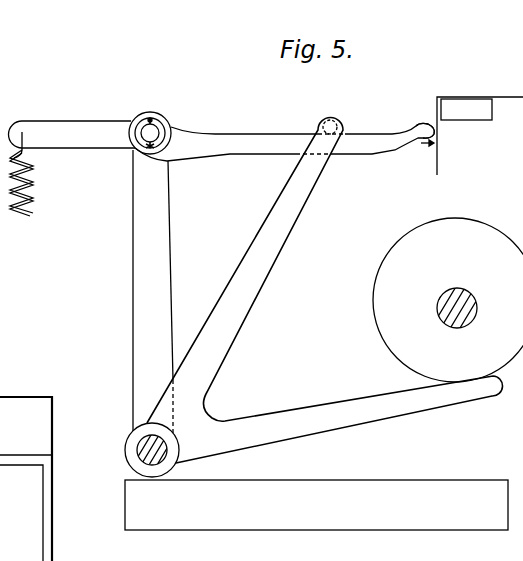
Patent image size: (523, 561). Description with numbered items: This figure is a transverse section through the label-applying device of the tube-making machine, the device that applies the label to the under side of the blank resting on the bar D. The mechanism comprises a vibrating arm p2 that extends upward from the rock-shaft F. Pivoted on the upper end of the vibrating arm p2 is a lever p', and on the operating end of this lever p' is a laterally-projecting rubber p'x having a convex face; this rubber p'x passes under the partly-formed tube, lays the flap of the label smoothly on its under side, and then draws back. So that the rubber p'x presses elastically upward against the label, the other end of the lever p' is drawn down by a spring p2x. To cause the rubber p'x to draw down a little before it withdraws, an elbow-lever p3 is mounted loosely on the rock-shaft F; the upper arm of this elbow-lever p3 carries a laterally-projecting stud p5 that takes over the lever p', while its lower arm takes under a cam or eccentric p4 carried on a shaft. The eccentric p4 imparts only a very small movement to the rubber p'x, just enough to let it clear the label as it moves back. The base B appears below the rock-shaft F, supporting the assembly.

The lever p' is at (222, 136).
The laterally-projecting rubber p'x is at (418, 122).
The vibrating arm p2 is at (153, 291).
The spring p2x is at (37, 201).
The elbow-lever p3 is at (325, 290).
The cam or eccentric p4 is at (448, 300).
The laterally-projecting stud p5 is at (339, 123).
The rock-shaft F is at (140, 448).
The bar D is at (480, 136).
The bed B is at (316, 505).